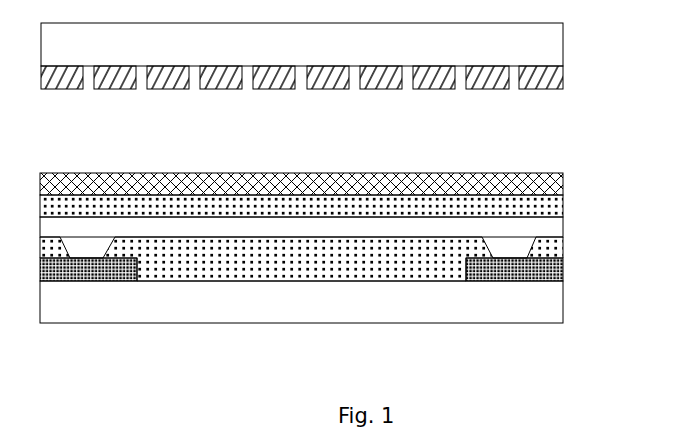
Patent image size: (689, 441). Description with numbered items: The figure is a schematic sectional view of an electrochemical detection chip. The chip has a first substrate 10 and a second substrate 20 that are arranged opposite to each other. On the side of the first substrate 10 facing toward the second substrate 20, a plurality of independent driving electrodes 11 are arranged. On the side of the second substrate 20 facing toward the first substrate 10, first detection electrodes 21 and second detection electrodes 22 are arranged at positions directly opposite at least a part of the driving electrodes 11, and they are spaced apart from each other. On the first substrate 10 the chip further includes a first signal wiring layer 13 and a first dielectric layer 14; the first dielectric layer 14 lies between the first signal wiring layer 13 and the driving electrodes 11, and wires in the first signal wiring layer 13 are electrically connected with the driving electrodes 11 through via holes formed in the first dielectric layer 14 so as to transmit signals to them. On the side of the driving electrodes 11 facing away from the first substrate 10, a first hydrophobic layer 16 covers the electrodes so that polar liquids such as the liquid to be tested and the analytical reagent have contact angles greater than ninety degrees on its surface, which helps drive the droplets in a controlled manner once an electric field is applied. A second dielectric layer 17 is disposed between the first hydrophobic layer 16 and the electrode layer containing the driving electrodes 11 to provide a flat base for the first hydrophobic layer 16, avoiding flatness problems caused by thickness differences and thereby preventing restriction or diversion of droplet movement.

The first substrate 10 is at (530, 301).
The driving electrode 11 is at (530, 226).
The first signal wiring layer 13 is at (530, 268).
The first dielectric layer 14 is at (285, 258).
The first hydrophobic layer 16 is at (530, 184).
The second dielectric layer 17 is at (530, 205).
The second substrate 20 is at (530, 43).
The first detection electrode 21 is at (524, 76).
The second detection electrode 22 is at (547, 99).